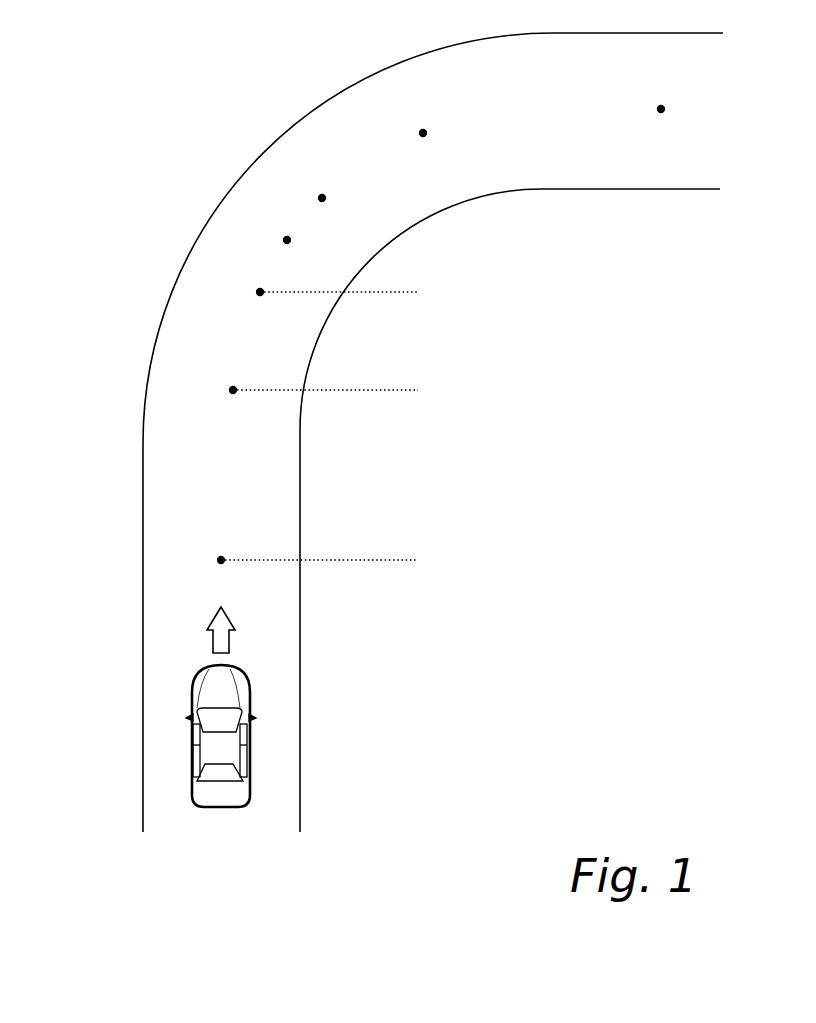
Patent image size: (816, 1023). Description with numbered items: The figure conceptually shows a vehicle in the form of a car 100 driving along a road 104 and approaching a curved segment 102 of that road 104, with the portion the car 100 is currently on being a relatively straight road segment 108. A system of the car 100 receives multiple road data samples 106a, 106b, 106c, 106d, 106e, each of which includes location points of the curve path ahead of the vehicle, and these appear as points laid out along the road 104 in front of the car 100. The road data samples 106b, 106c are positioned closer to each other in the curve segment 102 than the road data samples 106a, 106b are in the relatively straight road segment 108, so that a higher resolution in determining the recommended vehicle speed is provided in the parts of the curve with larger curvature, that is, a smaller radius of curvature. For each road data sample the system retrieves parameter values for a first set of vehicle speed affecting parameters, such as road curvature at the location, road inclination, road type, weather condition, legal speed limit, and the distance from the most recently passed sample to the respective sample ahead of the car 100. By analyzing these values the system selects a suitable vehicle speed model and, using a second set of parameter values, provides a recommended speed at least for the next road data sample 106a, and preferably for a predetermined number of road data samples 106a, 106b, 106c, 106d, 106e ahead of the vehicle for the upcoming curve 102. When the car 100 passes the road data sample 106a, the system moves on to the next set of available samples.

The car 100 is at (233, 749).
The curved segment 102 is at (371, 422).
The road 104 is at (157, 584).
The road data sample 106a is at (527, 590).
The road data sample 106b is at (516, 420).
The road data sample 106c is at (521, 316).
The road data sample 106d is at (265, 226).
The road data sample 106e is at (320, 172).
The relatively straight road segment 108 is at (121, 696).